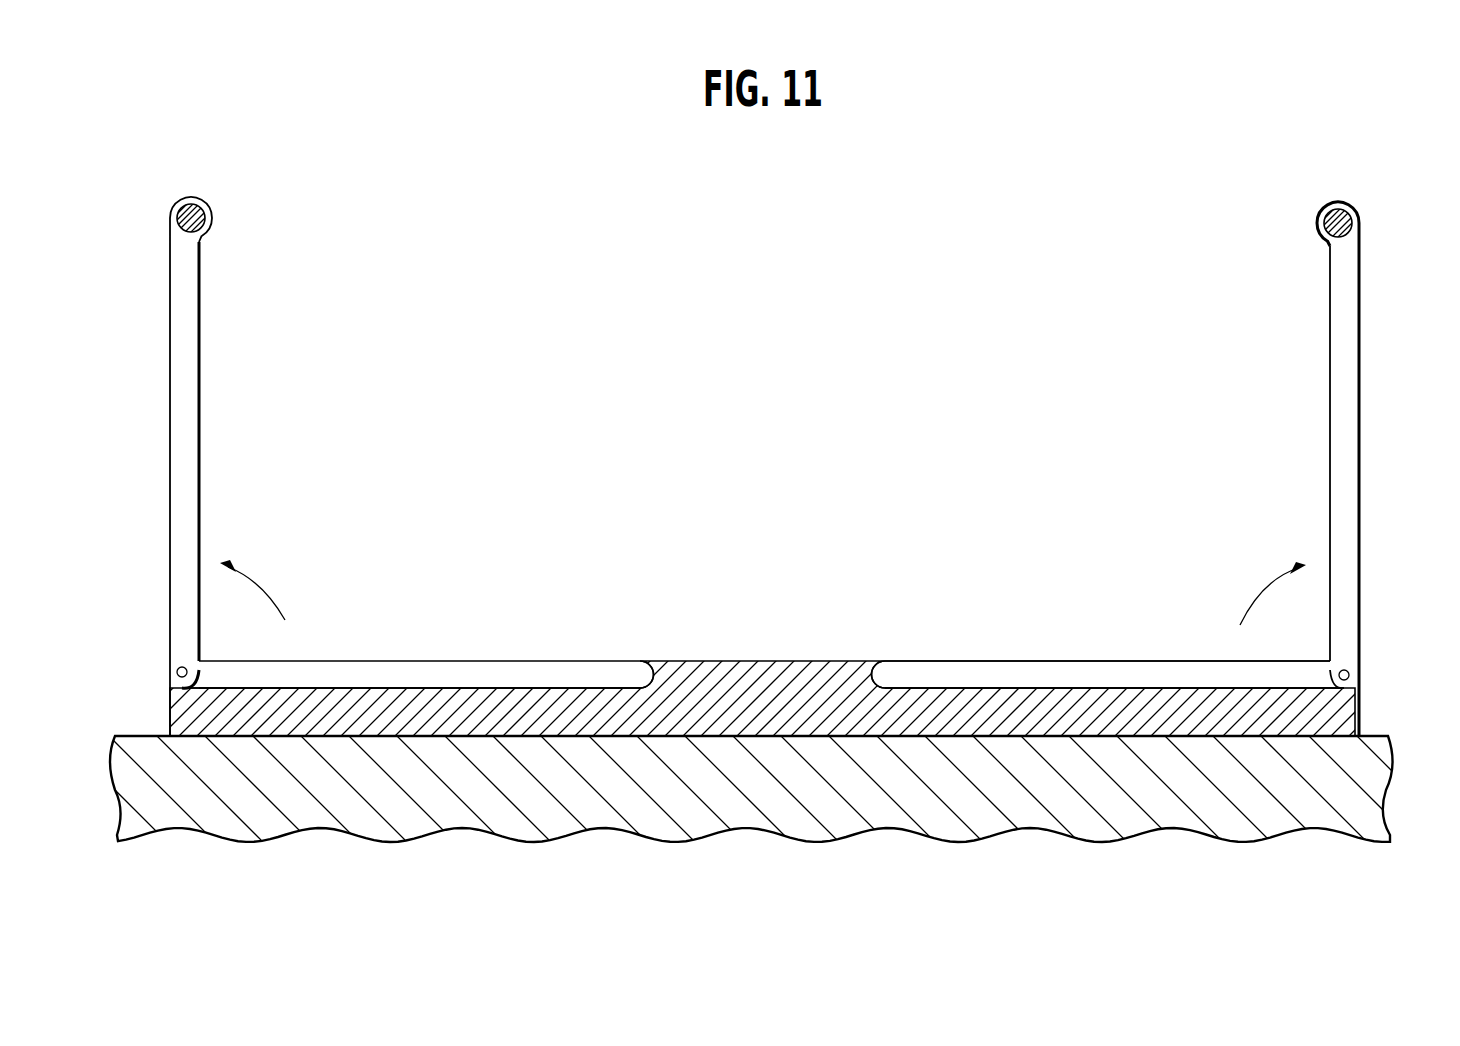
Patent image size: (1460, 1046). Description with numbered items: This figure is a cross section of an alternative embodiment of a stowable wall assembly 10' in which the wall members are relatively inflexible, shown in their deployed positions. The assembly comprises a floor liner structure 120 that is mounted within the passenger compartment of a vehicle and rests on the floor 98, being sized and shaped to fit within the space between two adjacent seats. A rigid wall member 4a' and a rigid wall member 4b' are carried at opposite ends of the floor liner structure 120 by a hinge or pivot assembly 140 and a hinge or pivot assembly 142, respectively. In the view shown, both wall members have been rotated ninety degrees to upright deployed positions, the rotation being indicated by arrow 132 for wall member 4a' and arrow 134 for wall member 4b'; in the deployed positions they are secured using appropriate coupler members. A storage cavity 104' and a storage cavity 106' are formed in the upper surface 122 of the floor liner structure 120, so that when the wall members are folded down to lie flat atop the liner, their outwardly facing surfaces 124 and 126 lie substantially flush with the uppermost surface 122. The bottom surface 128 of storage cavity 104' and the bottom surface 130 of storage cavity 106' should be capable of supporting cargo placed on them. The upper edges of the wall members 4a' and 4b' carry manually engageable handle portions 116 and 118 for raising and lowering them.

The stowable wall assembly 10' is at (764, 223).
The floor 98 is at (132, 736).
The floor liner structure 120 is at (824, 647).
The storage cavity 106' is at (418, 645).
The storage cavity 104' is at (1108, 645).
The bottom surface 130 is at (397, 688).
The bottom surface 128 is at (1168, 688).
The upper surface 122 is at (945, 662).
The outwardly facing surface 126 is at (170, 405).
The outwardly facing surface 124 is at (1360, 405).
The rigid wall member 4b' is at (228, 465).
The rigid wall member 4a' is at (1297, 467).
The handle portion 118 is at (212, 220).
The handle portion 116 is at (1318, 222).
The hinge or pivot assembly 142 is at (178, 668).
The hinge or pivot assembly 140 is at (1350, 677).
The arrow 134 is at (268, 592).
The arrow 132 is at (1258, 592).